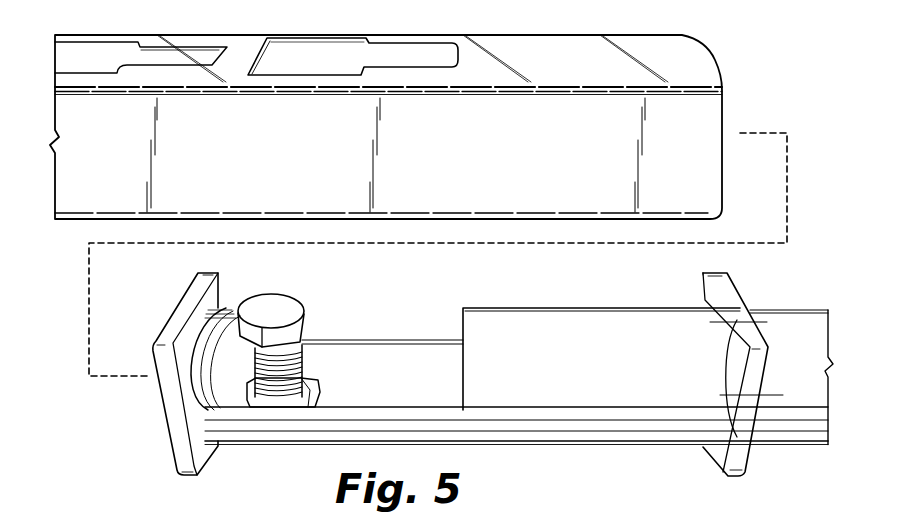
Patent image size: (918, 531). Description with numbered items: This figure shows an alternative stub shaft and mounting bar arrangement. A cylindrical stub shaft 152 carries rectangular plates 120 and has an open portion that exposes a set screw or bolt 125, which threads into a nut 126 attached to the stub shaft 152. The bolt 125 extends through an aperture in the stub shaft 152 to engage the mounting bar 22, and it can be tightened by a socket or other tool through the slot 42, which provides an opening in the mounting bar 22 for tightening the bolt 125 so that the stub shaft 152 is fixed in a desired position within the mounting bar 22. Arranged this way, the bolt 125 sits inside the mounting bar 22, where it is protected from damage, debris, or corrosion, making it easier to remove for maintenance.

The mounting bar 22 is at (429, 157).
The slot 42 is at (311, 65).
The rectangular plates 120 is at (185, 306).
The bolt 125 is at (286, 302).
The nut 126 is at (315, 381).
The stub shaft 152 is at (584, 379).